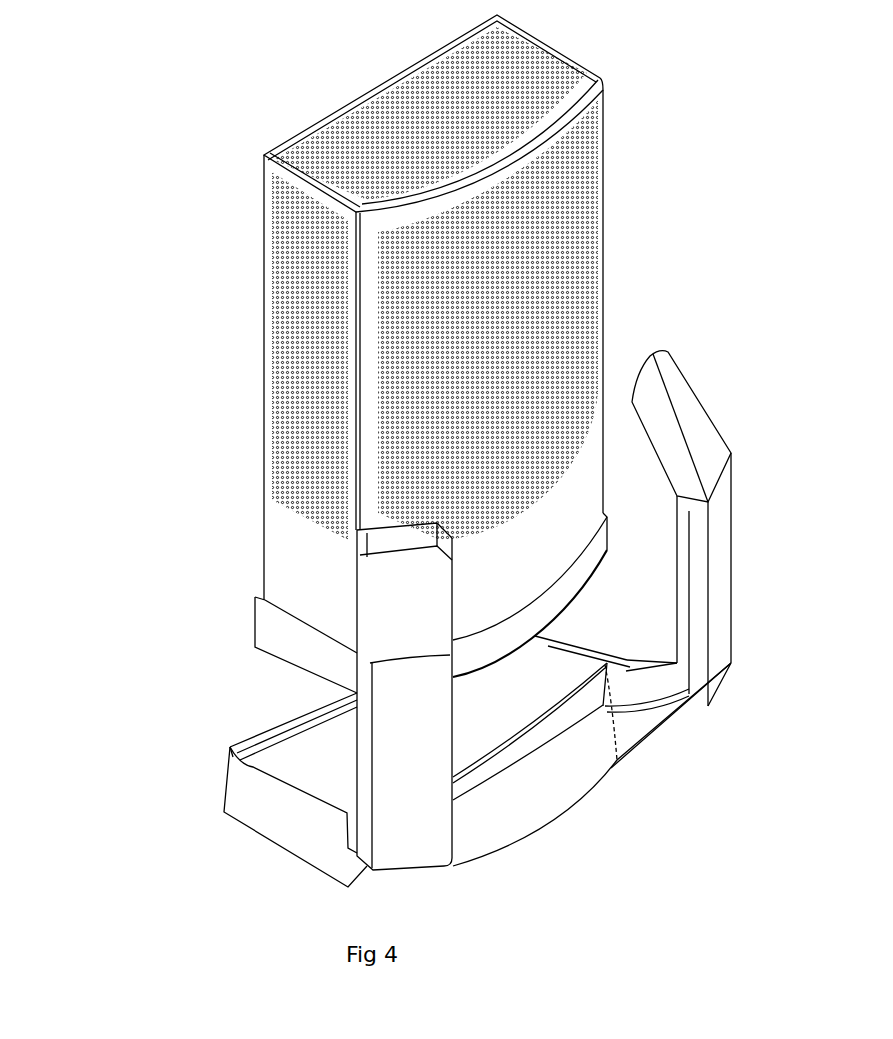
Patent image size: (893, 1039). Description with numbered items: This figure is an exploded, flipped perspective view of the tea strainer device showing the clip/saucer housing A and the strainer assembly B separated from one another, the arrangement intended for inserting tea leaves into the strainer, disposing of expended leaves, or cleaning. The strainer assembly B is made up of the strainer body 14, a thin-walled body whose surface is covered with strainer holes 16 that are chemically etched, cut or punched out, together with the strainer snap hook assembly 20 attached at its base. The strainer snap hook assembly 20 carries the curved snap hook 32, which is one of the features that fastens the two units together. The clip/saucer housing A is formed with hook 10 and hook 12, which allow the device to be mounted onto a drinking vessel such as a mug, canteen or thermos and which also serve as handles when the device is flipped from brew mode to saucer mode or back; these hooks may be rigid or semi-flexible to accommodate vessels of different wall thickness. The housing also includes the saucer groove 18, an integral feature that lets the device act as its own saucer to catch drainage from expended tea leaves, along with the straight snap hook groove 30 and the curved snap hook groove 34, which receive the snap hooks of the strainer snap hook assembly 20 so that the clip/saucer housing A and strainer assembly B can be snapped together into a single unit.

The hook 10 is at (407, 753).
The hook 12 is at (720, 550).
The strainer body 14 is at (300, 657).
The strainer holes 16 is at (300, 580).
The saucer groove 18 is at (240, 754).
The strainer snap hook assembly 20 is at (330, 690).
The straight snap hook groove 30 is at (255, 746).
The curved snap hook 32 is at (493, 667).
The curved snap hook groove 34 is at (477, 783).
The clip/saucer housing A is at (270, 860).
The strainer assembly B is at (612, 188).